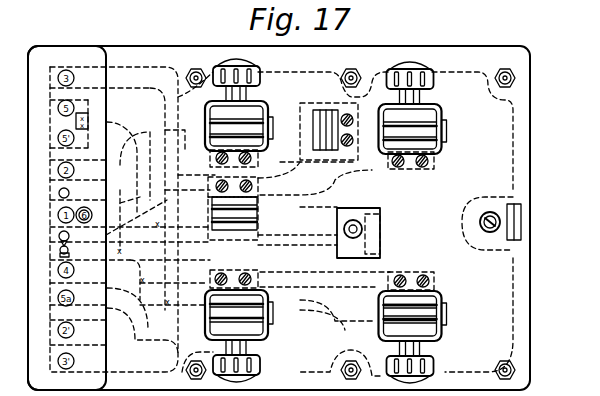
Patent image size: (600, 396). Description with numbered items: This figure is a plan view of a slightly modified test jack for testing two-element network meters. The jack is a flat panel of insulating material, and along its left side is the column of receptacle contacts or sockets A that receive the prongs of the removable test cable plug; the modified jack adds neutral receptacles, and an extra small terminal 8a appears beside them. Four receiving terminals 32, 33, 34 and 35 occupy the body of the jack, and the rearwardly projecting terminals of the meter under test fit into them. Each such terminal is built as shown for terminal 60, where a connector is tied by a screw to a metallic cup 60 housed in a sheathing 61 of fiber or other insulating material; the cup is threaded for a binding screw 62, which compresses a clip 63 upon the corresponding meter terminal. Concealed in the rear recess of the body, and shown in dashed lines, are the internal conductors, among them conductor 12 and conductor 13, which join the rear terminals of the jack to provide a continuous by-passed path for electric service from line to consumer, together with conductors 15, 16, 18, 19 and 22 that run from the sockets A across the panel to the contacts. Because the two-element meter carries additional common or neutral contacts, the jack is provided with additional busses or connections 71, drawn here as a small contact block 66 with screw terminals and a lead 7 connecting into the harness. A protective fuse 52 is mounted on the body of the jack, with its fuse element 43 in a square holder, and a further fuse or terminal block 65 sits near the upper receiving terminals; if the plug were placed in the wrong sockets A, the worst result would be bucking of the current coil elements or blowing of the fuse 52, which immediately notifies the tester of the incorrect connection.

The receiving terminal 35 is at (243, 105).
The conductor 18 is at (218, 130).
The receiving terminal 32 is at (446, 110).
The conductor 12 is at (414, 168).
The fuse block 65 is at (313, 128).
The contact block 66 is at (258, 208).
The busses or connections 71 is at (300, 203).
The conductor 7 is at (190, 198).
The protective fuse 52 is at (381, 238).
The switch button 43 is at (345, 226).
The conductor 13 is at (406, 270).
The metallic cup 60 is at (446, 333).
The receiving terminal 33 is at (446, 298).
The clip 63 is at (446, 314).
The sheathing 61 is at (377, 333).
The binding screw 62 is at (434, 363).
The receiving terminal 34 is at (270, 332).
The conductor 22 is at (196, 312).
The conductor 16 is at (125, 92).
The conductor 15 is at (151, 115).
The conductor 19 is at (146, 330).
The terminal 8a is at (69, 193).
The receptacle contacts or sockets A is at (40, 215).